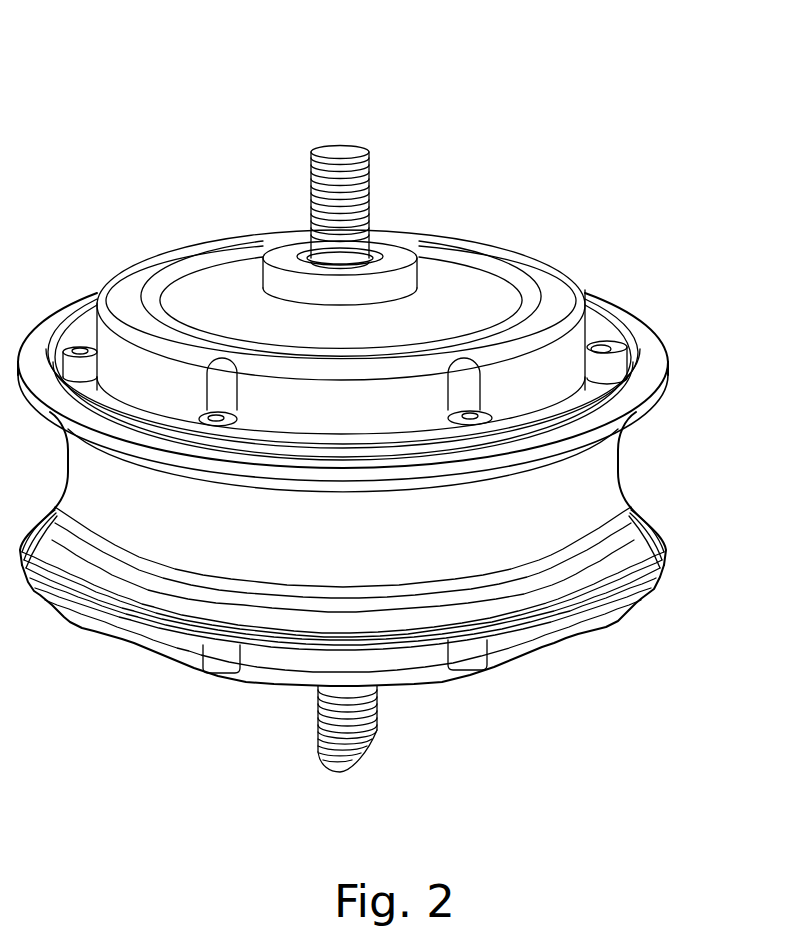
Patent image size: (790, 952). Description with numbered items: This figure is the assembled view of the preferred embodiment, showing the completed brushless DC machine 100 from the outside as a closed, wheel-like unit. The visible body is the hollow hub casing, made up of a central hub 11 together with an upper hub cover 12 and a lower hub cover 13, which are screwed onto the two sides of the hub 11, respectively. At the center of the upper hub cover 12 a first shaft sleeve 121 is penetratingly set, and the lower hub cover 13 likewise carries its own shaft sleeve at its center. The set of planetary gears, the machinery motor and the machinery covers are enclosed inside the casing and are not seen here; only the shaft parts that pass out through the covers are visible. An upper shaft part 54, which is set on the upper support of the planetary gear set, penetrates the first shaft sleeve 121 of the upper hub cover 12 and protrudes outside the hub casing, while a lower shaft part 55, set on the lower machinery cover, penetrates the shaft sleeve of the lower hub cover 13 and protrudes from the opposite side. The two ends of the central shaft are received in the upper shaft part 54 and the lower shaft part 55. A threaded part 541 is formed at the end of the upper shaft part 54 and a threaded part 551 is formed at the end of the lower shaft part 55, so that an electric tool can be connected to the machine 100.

The brushless DC machine 100 is at (111, 40).
The hub 11 is at (608, 473).
The upper hub cover 12 is at (537, 277).
The first shaft sleeve 121 is at (398, 247).
The lower hub cover 13 is at (530, 642).
The upper shaft part 54 is at (327, 247).
The threaded part 541 is at (335, 167).
The lower shaft part 55 is at (336, 739).
The threaded part 551 is at (328, 735).